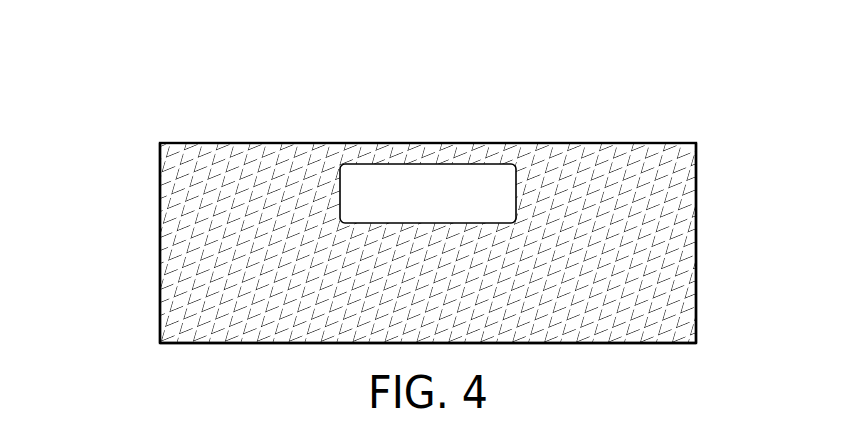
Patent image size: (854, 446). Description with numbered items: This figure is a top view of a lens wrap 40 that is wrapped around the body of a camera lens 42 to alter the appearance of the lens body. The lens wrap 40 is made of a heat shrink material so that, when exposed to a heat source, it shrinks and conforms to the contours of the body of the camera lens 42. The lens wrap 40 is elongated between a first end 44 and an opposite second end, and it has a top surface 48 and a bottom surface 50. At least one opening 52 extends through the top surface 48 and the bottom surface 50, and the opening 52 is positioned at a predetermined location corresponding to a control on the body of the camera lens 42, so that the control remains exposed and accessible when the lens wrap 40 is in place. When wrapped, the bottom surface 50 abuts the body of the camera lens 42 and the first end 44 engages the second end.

The lens wrap 40 is at (197, 143).
The camera lens 42 is at (160, 249).
The first end 44 is at (696, 238).
The top surface 48 is at (294, 174).
The bottom surface 50 is at (238, 345).
The opening 52 is at (456, 164).